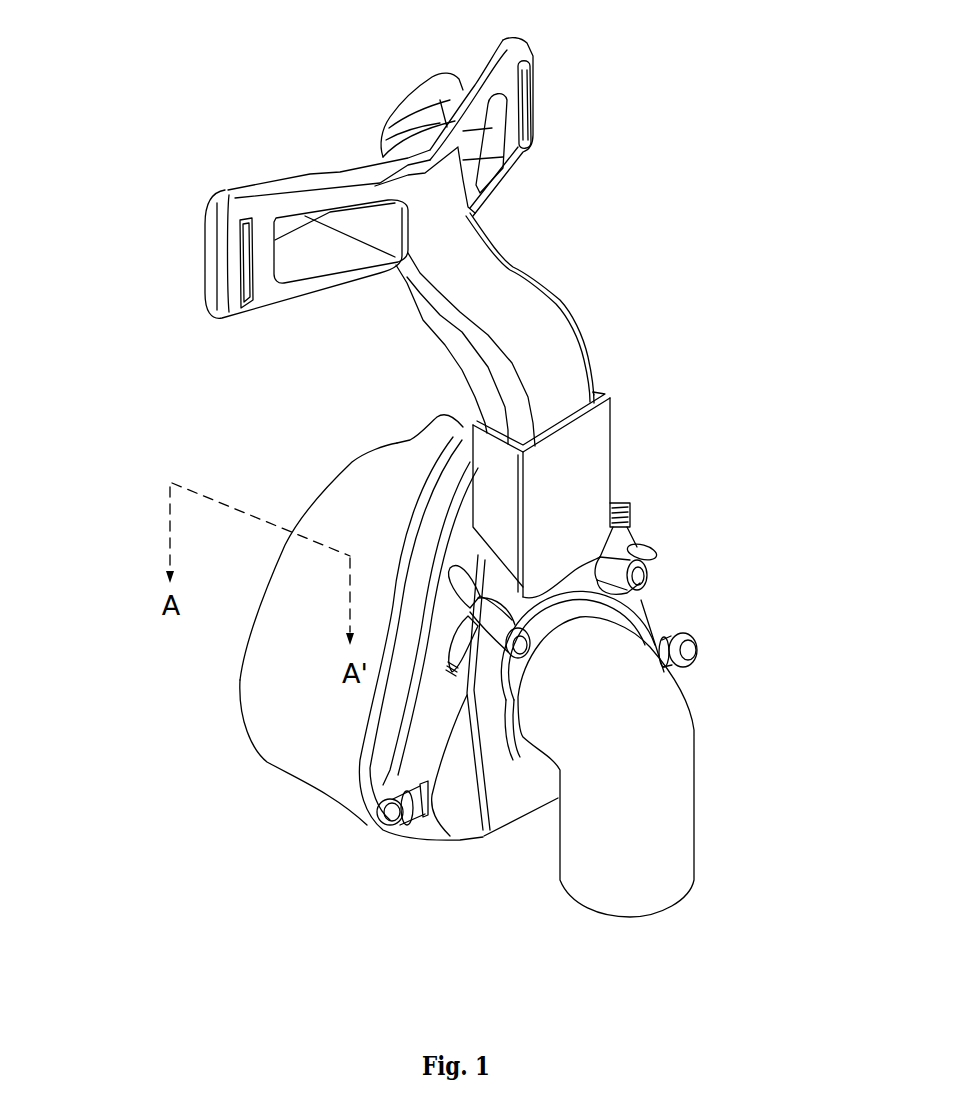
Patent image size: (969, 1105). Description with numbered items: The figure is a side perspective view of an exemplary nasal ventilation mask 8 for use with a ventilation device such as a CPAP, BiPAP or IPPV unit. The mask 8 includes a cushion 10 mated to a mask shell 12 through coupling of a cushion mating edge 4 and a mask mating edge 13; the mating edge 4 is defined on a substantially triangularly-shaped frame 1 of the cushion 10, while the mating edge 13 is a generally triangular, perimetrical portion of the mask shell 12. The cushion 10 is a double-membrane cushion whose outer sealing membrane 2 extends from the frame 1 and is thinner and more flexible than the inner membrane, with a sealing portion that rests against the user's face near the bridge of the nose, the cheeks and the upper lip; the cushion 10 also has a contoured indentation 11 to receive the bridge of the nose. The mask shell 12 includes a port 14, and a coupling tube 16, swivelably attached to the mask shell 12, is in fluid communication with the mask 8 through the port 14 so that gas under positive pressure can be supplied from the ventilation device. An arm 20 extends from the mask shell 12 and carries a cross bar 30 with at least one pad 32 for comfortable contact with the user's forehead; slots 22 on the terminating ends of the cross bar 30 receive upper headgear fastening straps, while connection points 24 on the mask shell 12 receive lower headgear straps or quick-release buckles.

The frame 1 is at (313, 683).
The outer sealing membrane 2 is at (240, 648).
The cushion mating edge 4 is at (347, 722).
The nasal ventilation mask 8 is at (750, 290).
The cushion 10 is at (339, 495).
The indentation 11 is at (405, 435).
The mask shell 12 is at (595, 475).
The mask mating edge 13 is at (370, 767).
The port 14 is at (580, 622).
The coupling tube 16 is at (665, 753).
The arm 20 is at (488, 291).
The slots 22 is at (520, 84).
The connection points 24 is at (400, 821).
The cross bar 30 is at (227, 193).
The pad 32 is at (384, 90).